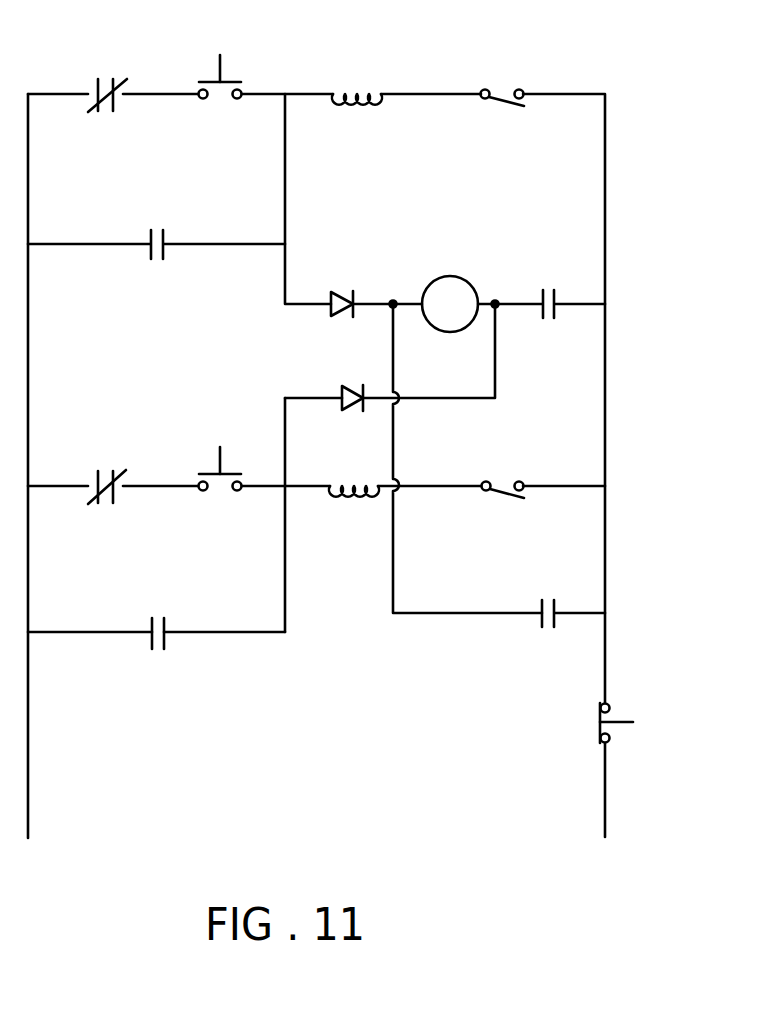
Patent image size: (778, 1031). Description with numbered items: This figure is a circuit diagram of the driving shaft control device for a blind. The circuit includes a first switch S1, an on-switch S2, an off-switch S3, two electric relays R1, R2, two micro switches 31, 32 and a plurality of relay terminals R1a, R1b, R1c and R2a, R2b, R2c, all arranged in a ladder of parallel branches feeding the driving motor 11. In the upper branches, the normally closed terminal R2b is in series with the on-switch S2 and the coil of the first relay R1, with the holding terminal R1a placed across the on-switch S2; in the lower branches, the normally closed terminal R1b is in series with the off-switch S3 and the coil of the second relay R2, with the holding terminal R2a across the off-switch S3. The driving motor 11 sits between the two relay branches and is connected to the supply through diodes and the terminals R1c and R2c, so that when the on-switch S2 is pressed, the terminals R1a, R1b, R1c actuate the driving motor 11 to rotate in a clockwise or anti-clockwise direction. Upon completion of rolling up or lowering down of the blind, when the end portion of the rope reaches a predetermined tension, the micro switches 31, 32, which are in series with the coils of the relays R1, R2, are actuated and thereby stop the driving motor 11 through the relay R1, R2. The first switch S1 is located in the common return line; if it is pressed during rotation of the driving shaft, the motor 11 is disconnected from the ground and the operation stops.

The driving motor 11 is at (450, 277).
The micro switch 31 is at (497, 90).
The micro switch 32 is at (497, 480).
The electric relay R1 is at (357, 116).
The electric relay R2 is at (354, 510).
The terminal R1a is at (162, 265).
The terminal R1b is at (109, 504).
The terminal R1c is at (545, 322).
The terminal R2a is at (164, 653).
The terminal R2b is at (108, 76).
The terminal R2c is at (545, 632).
The first switch S1 is at (622, 736).
The on-switch S2 is at (220, 95).
The off-switch S3 is at (220, 490).